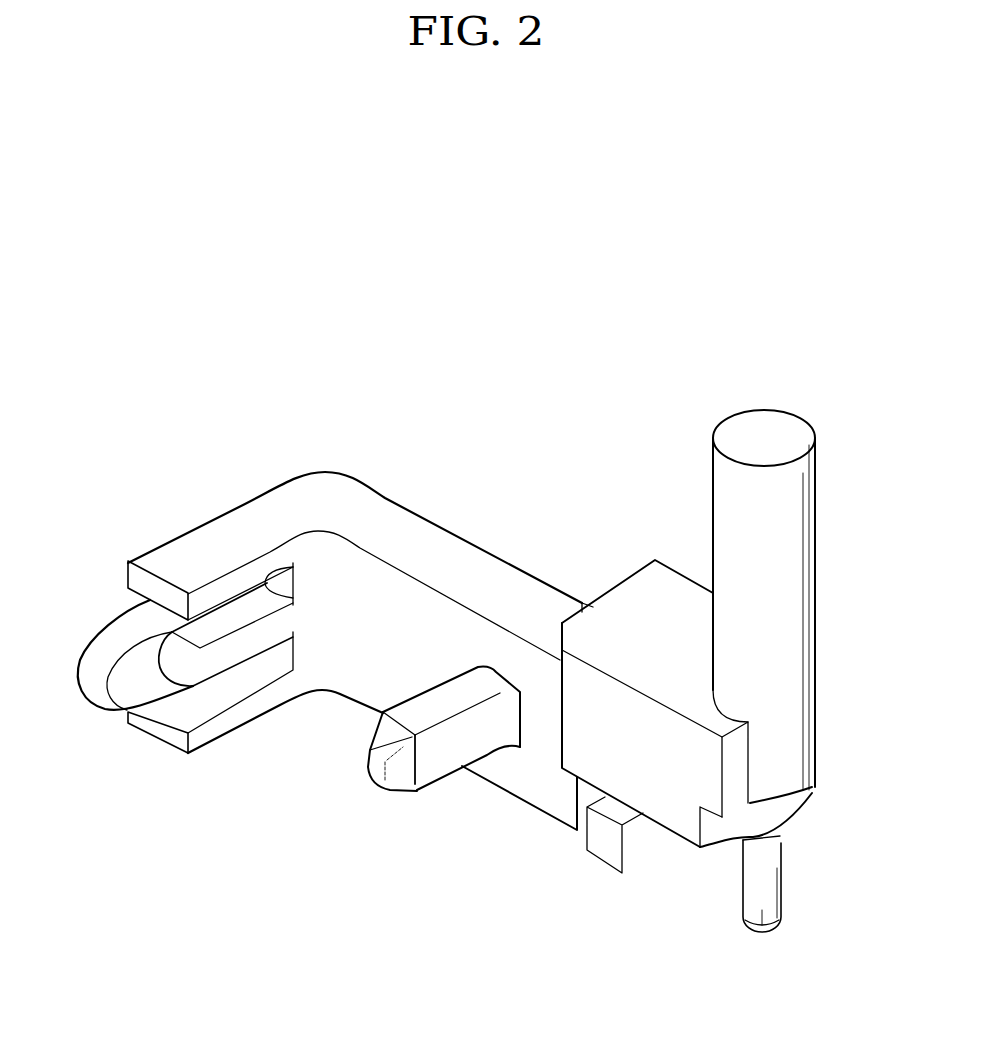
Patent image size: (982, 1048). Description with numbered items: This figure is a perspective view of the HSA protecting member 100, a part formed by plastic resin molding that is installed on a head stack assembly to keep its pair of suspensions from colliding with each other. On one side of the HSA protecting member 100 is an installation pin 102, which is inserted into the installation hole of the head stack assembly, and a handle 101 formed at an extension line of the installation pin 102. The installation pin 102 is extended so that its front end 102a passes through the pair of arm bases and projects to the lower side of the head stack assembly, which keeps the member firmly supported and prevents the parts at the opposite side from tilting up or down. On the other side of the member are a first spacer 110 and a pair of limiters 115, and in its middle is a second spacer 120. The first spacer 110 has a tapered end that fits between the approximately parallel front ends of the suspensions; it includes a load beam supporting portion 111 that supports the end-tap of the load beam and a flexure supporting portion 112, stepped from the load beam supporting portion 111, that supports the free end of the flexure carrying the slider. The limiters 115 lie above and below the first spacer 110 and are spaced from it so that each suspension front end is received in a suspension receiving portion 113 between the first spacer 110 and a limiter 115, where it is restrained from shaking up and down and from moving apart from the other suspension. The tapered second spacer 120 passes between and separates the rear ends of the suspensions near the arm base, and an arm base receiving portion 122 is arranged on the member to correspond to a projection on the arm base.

The HSA protecting member 100 is at (245, 337).
The handle 101 is at (803, 543).
The installation pin 102 is at (773, 868).
The front end of the installation pin 102a is at (758, 935).
The first spacer 110 is at (95, 801).
The load beam supporting portion 111 is at (85, 678).
The flexure supporting portion 112 is at (172, 665).
The suspension receiving portion 113 is at (246, 601).
The limiter 115 is at (162, 585).
The second spacer 120 is at (398, 777).
The arm base receiving portion 122 is at (617, 812).